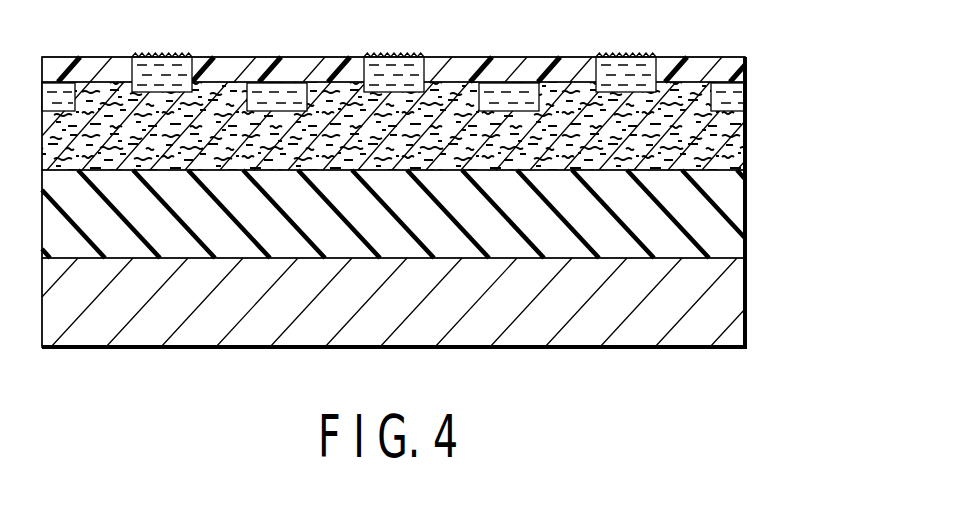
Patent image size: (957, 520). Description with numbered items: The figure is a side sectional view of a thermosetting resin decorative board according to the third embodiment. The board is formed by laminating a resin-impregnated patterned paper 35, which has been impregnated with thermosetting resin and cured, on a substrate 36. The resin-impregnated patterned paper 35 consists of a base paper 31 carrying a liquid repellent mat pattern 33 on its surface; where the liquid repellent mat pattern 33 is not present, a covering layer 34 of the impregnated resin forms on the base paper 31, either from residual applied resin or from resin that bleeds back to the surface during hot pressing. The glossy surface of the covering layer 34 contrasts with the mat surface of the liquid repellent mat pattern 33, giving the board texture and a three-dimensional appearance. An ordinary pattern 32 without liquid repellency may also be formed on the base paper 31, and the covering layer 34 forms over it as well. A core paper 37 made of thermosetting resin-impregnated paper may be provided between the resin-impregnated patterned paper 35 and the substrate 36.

The base paper 31 is at (747, 142).
The ordinary pattern 32 is at (747, 97).
The liquid repellent mat pattern 33 is at (637, 56).
The covering layer 34 is at (747, 60).
The resin-impregnated patterned paper 35 is at (828, 0).
The substrate 36 is at (738, 305).
The core paper 37 is at (741, 228).